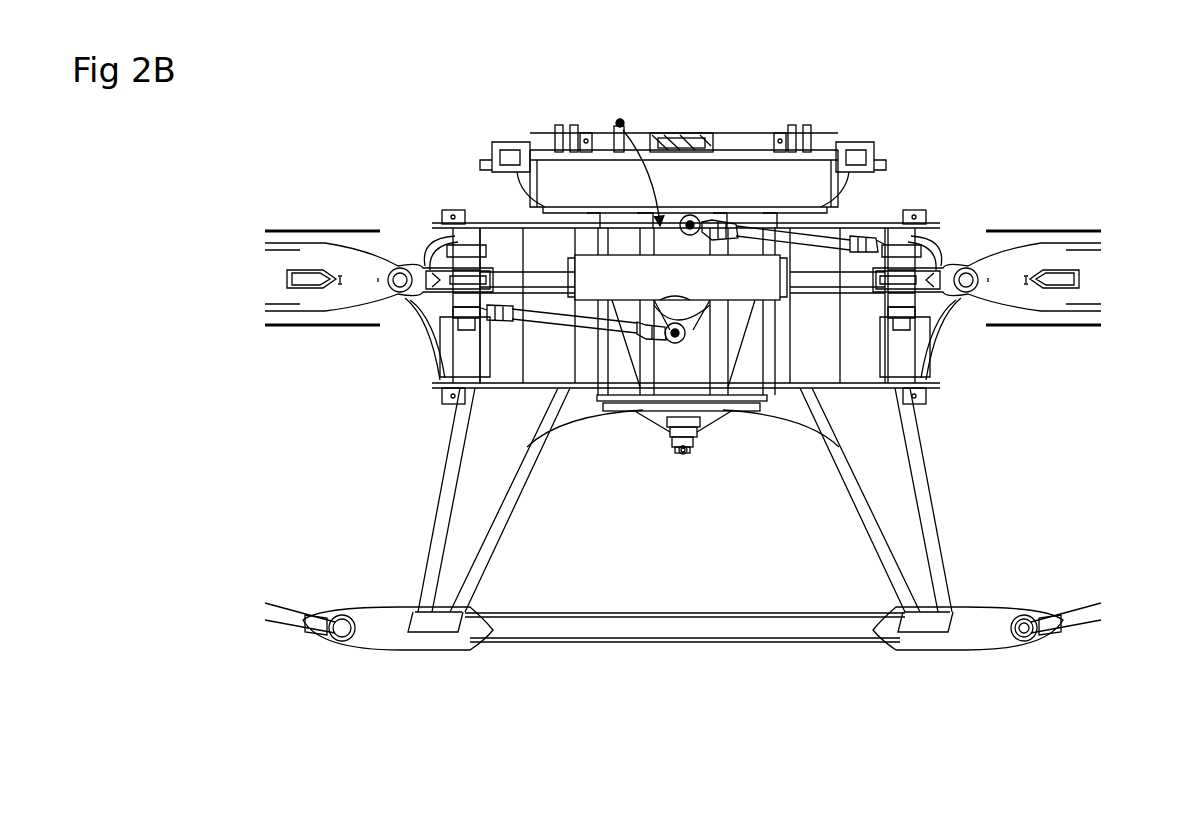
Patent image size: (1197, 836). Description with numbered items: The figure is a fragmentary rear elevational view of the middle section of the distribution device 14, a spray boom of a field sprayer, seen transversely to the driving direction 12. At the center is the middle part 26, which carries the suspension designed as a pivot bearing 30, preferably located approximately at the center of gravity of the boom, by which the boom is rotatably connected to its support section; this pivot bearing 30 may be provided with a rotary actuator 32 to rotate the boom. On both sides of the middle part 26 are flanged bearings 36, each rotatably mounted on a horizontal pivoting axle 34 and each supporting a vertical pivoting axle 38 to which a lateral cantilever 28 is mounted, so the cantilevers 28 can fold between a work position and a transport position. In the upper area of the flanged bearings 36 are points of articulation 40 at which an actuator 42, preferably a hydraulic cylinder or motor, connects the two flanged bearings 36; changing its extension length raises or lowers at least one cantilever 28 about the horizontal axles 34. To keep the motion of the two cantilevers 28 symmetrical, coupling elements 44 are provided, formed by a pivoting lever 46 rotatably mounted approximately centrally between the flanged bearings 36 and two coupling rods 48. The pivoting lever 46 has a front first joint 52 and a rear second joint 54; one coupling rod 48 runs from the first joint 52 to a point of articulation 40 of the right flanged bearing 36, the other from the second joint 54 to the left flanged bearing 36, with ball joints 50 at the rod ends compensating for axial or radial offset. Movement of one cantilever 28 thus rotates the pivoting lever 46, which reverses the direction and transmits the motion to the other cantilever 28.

The driving direction 12 is at (1135, 37).
The distribution device 14 is at (733, 670).
The middle part 26 is at (532, 141).
The lateral cantilever 28 is at (283, 226).
The pivot bearing 30 is at (683, 458).
The rotary actuator 32 is at (683, 513).
The horizontal pivoting axle 34 is at (447, 209).
The flanged bearing 36 is at (424, 314).
The vertical pivoting axle 38 is at (397, 268).
The point of articulation 40 is at (461, 311).
The actuator 42 is at (738, 292).
The coupling element 44 is at (619, 124).
The pivoting lever 46 is at (700, 320).
The coupling rod 48 is at (818, 230).
The ball joint 50 is at (712, 225).
The first joint 52 is at (690, 213).
The second joint 54 is at (673, 346).